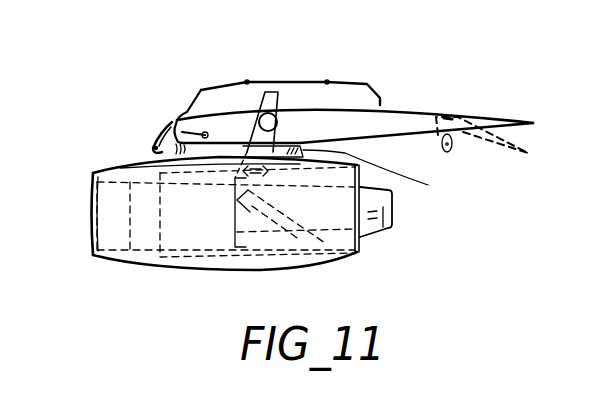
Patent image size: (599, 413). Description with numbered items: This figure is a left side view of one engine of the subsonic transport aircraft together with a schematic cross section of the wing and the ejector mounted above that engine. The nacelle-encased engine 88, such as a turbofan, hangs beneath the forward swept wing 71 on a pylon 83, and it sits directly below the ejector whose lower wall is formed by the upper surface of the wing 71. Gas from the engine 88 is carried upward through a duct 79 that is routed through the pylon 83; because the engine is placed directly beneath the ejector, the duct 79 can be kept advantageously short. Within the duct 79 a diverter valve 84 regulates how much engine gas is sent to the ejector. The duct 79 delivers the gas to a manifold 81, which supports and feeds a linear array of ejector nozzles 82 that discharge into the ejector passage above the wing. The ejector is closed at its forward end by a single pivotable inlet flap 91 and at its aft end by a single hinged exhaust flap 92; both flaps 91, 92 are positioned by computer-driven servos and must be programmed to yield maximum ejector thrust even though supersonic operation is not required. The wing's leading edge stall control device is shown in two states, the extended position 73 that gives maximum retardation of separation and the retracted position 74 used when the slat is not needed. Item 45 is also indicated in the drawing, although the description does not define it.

The canopy hatch hinges 45 is at (325, 81).
The forward swept wing 71 is at (428, 120).
The slat extended position 73 is at (157, 130).
The slat retracted position 74 is at (196, 138).
The duct 79 is at (360, 243).
The manifold 81 is at (277, 121).
The ejector nozzles 82 is at (277, 96).
The pylon 83 is at (380, 174).
The diverter valve 84 is at (283, 204).
The nacelle-encased engine 88 is at (125, 160).
The pivotable inlet flap 91 is at (213, 87).
The hinged exhaust flap 92 is at (347, 82).